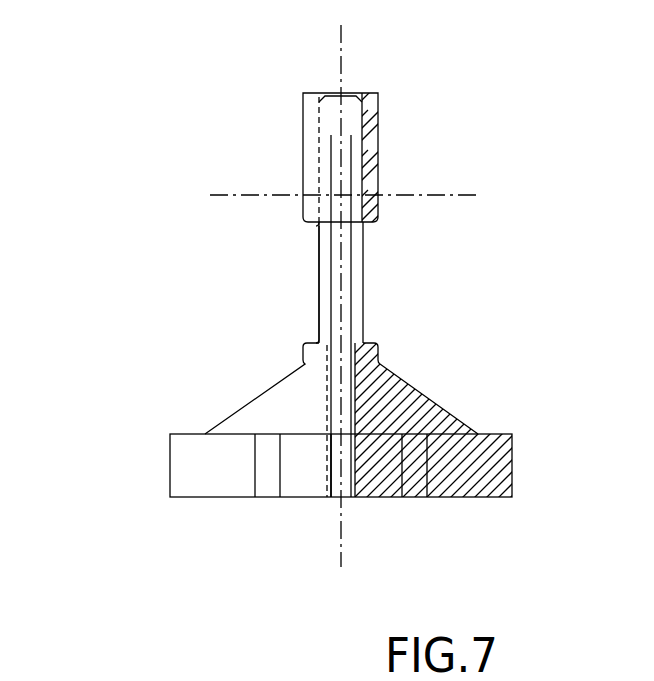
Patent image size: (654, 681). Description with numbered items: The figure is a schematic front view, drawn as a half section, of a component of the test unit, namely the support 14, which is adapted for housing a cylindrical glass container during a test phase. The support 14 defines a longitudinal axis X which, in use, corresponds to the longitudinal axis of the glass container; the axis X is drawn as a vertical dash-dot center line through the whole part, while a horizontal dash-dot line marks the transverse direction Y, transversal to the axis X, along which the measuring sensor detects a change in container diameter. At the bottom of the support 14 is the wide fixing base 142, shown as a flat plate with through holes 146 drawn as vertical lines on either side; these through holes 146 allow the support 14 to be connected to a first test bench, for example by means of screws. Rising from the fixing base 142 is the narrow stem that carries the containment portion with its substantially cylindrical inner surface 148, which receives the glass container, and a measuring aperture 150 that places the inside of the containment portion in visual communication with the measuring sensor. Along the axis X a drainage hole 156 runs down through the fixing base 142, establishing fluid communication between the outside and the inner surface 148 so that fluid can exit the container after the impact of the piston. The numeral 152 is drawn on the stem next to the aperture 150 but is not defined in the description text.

The support 14 is at (442, 406).
The fixing base 142 is at (514, 468).
The through holes 146 is at (267, 499).
The substantially cylindrical inner surface 148 is at (321, 125).
The measuring aperture 150 is at (318, 290).
The shaft 152 is at (364, 273).
The drainage hole 156 is at (334, 499).
The longitudinal axis X is at (343, 28).
The transverse direction Y is at (478, 193).